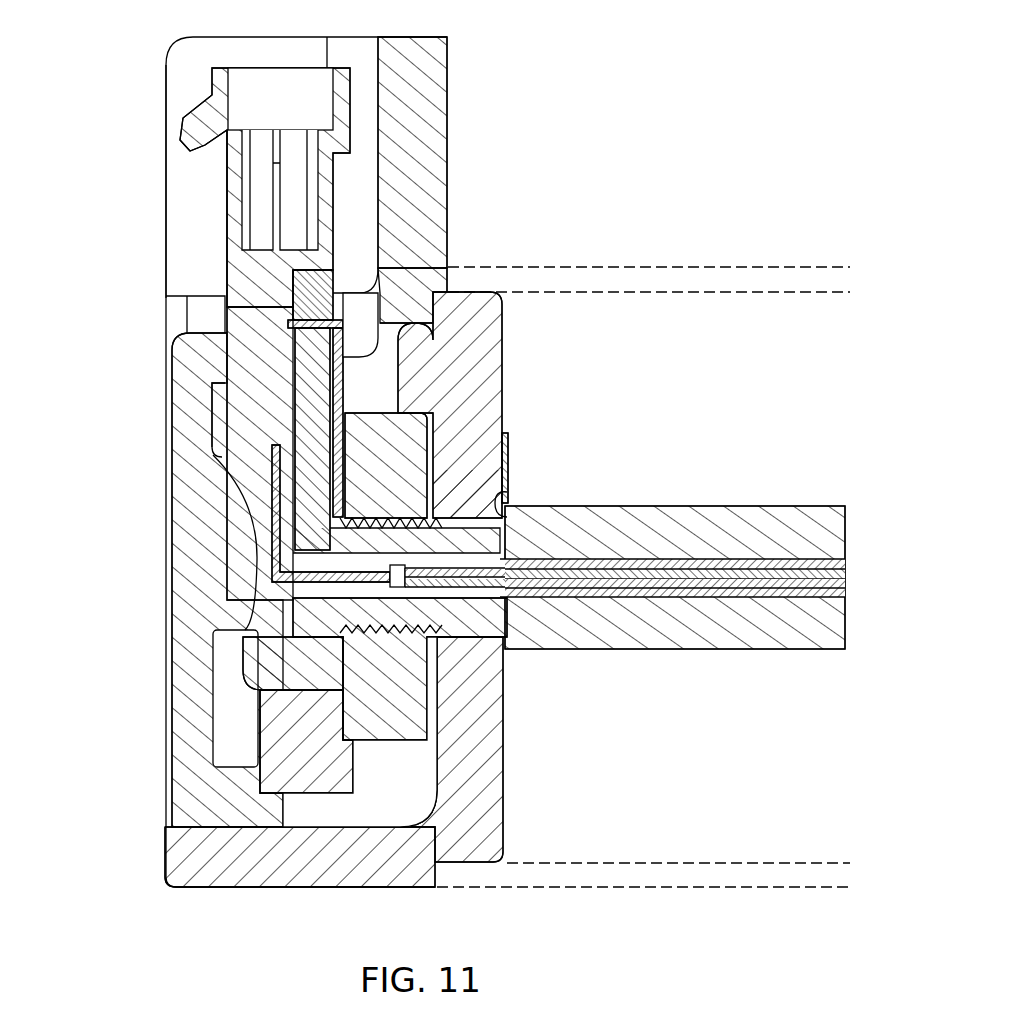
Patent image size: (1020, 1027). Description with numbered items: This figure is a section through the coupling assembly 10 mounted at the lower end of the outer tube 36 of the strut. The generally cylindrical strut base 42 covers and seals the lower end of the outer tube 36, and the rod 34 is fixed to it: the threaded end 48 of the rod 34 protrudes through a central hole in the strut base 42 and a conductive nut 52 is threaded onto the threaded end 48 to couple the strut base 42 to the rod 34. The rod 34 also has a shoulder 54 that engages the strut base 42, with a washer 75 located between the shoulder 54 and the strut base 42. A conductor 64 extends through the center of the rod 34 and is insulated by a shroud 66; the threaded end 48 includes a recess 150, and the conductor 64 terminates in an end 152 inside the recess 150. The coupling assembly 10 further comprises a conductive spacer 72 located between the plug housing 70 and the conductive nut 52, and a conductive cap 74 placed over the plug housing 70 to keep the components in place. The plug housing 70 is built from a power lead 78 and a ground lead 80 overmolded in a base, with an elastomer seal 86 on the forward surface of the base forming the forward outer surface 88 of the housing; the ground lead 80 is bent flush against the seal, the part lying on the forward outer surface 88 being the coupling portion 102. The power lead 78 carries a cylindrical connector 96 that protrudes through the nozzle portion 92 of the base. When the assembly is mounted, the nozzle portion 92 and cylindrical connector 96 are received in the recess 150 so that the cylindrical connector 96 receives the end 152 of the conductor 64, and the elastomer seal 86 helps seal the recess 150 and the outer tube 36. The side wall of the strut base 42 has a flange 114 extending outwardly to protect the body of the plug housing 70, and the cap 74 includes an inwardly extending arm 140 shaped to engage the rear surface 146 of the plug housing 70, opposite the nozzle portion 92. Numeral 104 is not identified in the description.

The coupling assembly 10 is at (138, 380).
The rod 34 is at (830, 506).
The outer tube 36 is at (722, 268).
The strut base 42 is at (325, 888).
The threaded end 48 is at (396, 483).
The conductive nut 52 is at (427, 437).
The shoulder 54 is at (508, 500).
The conductor 64 is at (850, 566).
The shroud 66 is at (850, 592).
The plug housing 70 is at (222, 265).
The spacer 72 is at (432, 330).
The cap 74 is at (190, 685).
The washer 75 is at (508, 455).
The power lead 78 is at (273, 190).
The ground lead 80 is at (300, 418).
The elastomer seal 86 is at (296, 366).
The forward outer surface 88 is at (390, 397).
The nozzle portion 92 is at (400, 669).
The cylindrical connector 96 is at (485, 590).
The coupling portion 102 is at (293, 440).
The cover 104 is at (215, 112).
The flange 114 is at (447, 122).
The inwardly extending arm 140 is at (235, 580).
The rear surface 146 is at (215, 500).
The recess 150 is at (467, 491).
The end 152 is at (451, 749).